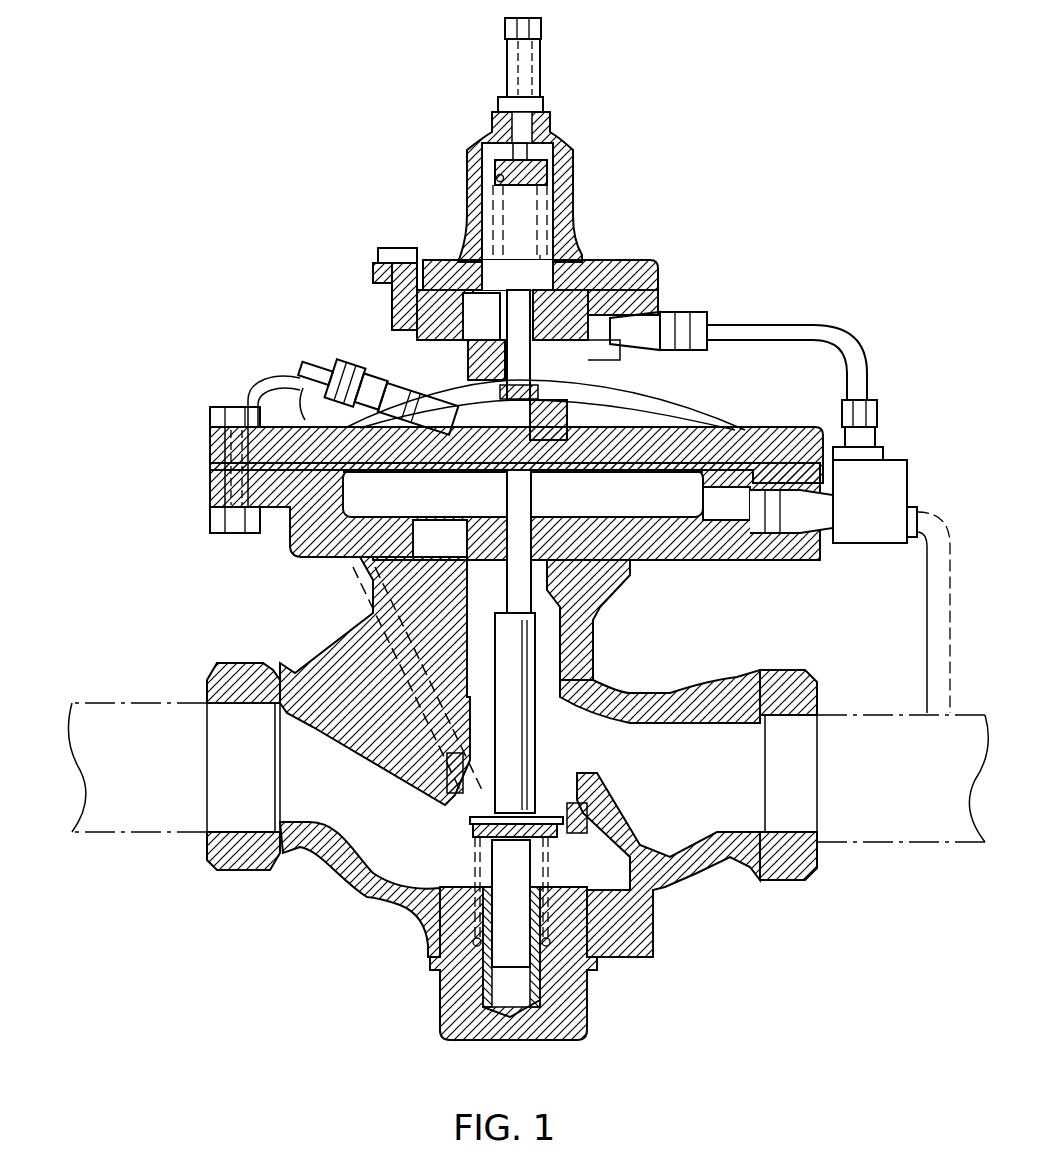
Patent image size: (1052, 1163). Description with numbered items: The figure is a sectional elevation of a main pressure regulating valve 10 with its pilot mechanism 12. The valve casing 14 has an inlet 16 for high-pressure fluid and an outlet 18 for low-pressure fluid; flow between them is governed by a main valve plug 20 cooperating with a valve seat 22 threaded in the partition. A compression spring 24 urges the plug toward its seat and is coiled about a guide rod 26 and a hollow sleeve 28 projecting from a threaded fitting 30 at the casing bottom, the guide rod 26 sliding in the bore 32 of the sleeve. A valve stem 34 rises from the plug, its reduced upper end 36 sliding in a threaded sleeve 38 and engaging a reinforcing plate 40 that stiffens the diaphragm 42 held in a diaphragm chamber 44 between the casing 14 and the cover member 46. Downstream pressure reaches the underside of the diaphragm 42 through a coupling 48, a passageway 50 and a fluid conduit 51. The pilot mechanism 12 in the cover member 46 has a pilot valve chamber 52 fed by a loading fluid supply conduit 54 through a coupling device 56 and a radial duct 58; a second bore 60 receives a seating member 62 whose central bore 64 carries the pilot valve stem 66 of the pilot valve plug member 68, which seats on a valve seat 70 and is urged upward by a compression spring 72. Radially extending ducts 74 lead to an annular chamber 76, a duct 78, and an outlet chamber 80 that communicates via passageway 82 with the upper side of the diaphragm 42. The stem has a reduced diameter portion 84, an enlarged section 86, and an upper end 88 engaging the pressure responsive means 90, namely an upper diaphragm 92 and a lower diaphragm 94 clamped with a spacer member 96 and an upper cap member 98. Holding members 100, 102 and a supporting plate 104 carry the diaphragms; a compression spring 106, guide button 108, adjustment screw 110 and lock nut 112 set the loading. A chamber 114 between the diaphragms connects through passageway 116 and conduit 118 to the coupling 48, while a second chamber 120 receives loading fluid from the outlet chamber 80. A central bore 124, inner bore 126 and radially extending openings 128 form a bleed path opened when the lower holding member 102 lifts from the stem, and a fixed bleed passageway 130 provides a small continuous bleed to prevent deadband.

The main pressure regulating valve 10 is at (186, 689).
The pilot mechanism 12 is at (738, 391).
The valve casing 14 is at (347, 892).
The inlet 16 is at (207, 830).
The outlet 18 is at (823, 713).
The main valve plug 20 is at (563, 837).
The valve seat 22 is at (570, 787).
The compression spring 24 is at (550, 875).
The guide rod 26 is at (520, 922).
The hollow sleeve 28 is at (487, 988).
The threaded fitting 30 is at (583, 999).
The bore 32 is at (512, 1017).
The valve stem 34 is at (535, 717).
The reduced upper end 36 is at (592, 622).
The threaded sleeve 38 is at (632, 575).
The reinforcing plate 40 is at (358, 555).
The diaphragm 42 is at (345, 478).
The diaphragm chamber 44 is at (657, 518).
The cover member 46 is at (750, 440).
The coupling 48 is at (878, 503).
The passageway 50 is at (738, 522).
The fluid conduit 51 is at (928, 590).
The pilot valve chamber 52 is at (658, 428).
The loading fluid supply conduit 54 is at (292, 362).
The coupling device 56 is at (365, 365).
The radial duct 58 is at (410, 337).
The second bore 60 is at (486, 360).
The seating member 62 is at (655, 345).
The central bore 64 is at (412, 350).
The pilot valve stem 66 is at (600, 372).
The pilot valve plug member 68 is at (600, 410).
The valve seat 70 is at (440, 538).
The compression spring 72 is at (535, 500).
The radially extending ducts 74 is at (370, 410).
The annular chamber 76 is at (425, 333).
The duct 78 is at (635, 440).
The outlet chamber 80 is at (615, 405).
The passageway 82 is at (705, 498).
The reduced diameter portion 84 is at (555, 388).
The enlarged section 86 is at (536, 345).
The upper end 88 is at (373, 273).
The pressure responsive means 90 is at (552, 292).
The upper diaphragm 92 is at (545, 290).
The lower diaphragm 94 is at (632, 262).
The spacer member 96 is at (645, 305).
The upper cap member 98 is at (572, 170).
The upper central holding member 100 is at (430, 278).
The lower central holding member 102 is at (378, 255).
The supporting plate 104 is at (478, 228).
The compression spring 106 is at (497, 207).
The guide button 108 is at (495, 165).
The adjustment screw 110 is at (522, 152).
The lock nut 112 is at (541, 92).
The chamber 114 is at (605, 292).
The passageway 116 is at (660, 305).
The conduit 118 is at (850, 335).
The second chamber 120 is at (622, 392).
The central bore 124 is at (462, 252).
The inner bore 126 is at (513, 283).
The radially extending openings 128 is at (540, 255).
The fixed bleed passageway 130 is at (480, 316).